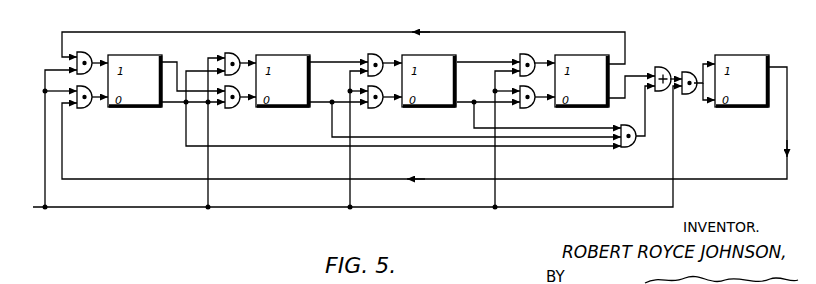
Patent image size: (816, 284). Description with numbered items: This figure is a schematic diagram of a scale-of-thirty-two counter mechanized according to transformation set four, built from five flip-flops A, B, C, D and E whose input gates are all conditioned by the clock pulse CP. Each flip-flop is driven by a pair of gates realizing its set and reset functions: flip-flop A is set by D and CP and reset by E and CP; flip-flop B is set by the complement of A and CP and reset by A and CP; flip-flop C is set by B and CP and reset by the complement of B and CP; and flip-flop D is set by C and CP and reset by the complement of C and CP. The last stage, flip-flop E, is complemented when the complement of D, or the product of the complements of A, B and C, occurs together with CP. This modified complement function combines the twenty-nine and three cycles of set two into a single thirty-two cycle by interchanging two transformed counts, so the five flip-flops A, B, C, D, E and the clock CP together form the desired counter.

The flip-flop A is at (173, 109).
The flip-flop B is at (327, 83).
The flip-flop C is at (472, 82).
The flip-flop D is at (638, 76).
The flip-flop E is at (710, 101).
The clock pulse CP is at (357, 142).